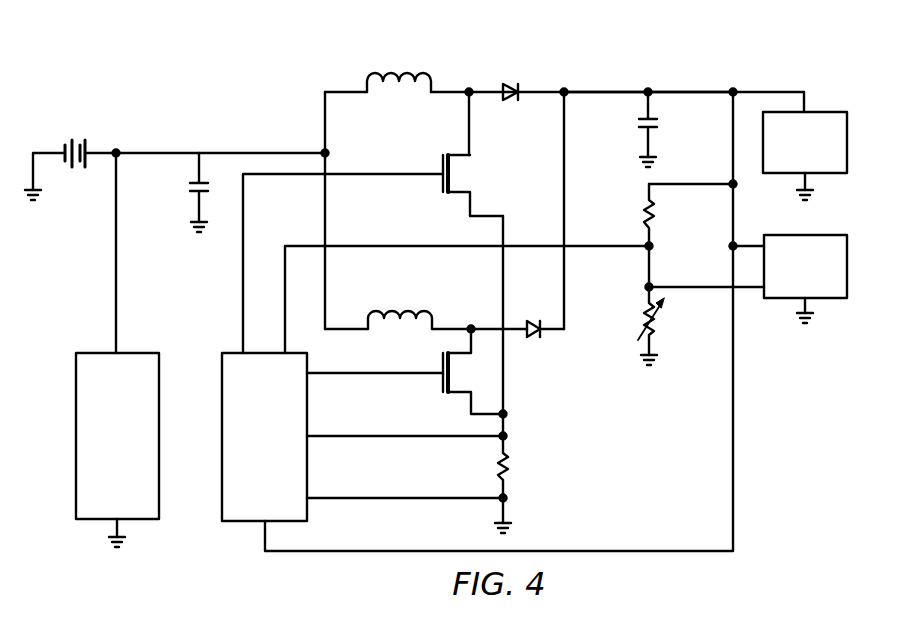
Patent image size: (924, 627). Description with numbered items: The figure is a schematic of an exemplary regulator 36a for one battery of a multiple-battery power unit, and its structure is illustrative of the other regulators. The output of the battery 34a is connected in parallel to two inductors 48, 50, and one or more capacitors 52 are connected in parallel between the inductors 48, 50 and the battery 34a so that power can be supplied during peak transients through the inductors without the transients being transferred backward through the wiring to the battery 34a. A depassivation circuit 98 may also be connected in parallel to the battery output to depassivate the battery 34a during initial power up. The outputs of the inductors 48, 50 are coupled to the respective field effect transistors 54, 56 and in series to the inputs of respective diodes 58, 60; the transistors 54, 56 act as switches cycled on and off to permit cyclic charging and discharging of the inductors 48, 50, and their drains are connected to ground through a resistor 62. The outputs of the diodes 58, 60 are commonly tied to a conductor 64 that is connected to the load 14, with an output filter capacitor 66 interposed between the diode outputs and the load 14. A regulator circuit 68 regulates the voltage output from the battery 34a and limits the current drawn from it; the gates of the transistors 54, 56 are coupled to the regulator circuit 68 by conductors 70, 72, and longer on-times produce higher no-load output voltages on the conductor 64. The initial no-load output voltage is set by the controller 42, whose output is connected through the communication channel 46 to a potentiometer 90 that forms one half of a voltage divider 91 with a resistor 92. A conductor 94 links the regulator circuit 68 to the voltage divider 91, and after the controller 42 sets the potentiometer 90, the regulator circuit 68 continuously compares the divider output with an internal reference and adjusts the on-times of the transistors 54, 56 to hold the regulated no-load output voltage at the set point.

The battery 34a is at (78, 138).
The capacitor 52 is at (190, 184).
The depassivation circuit 98 is at (104, 452).
The inductor 48 is at (392, 70).
The diode 58 is at (512, 84).
The conductor 64 is at (605, 90).
The output filter capacitor 66 is at (660, 124).
The load 14 is at (818, 153).
The controller 42 is at (818, 278).
The resistor 92 is at (644, 213).
The voltage divider 91 is at (662, 227).
The potentiometer 90 is at (645, 318).
The communication channel 46 is at (691, 288).
The field effect transistor 54 is at (440, 164).
The conductor 70 is at (375, 176).
The conductor 94 is at (449, 248).
The inductor 50 is at (393, 312).
The diode 60 is at (538, 334).
The field effect transistor 56 is at (444, 385).
The conductor 72 is at (357, 376).
The resistor 62 is at (510, 468).
The regulator circuit 68 is at (251, 450).
The regulator 36a is at (226, 310).